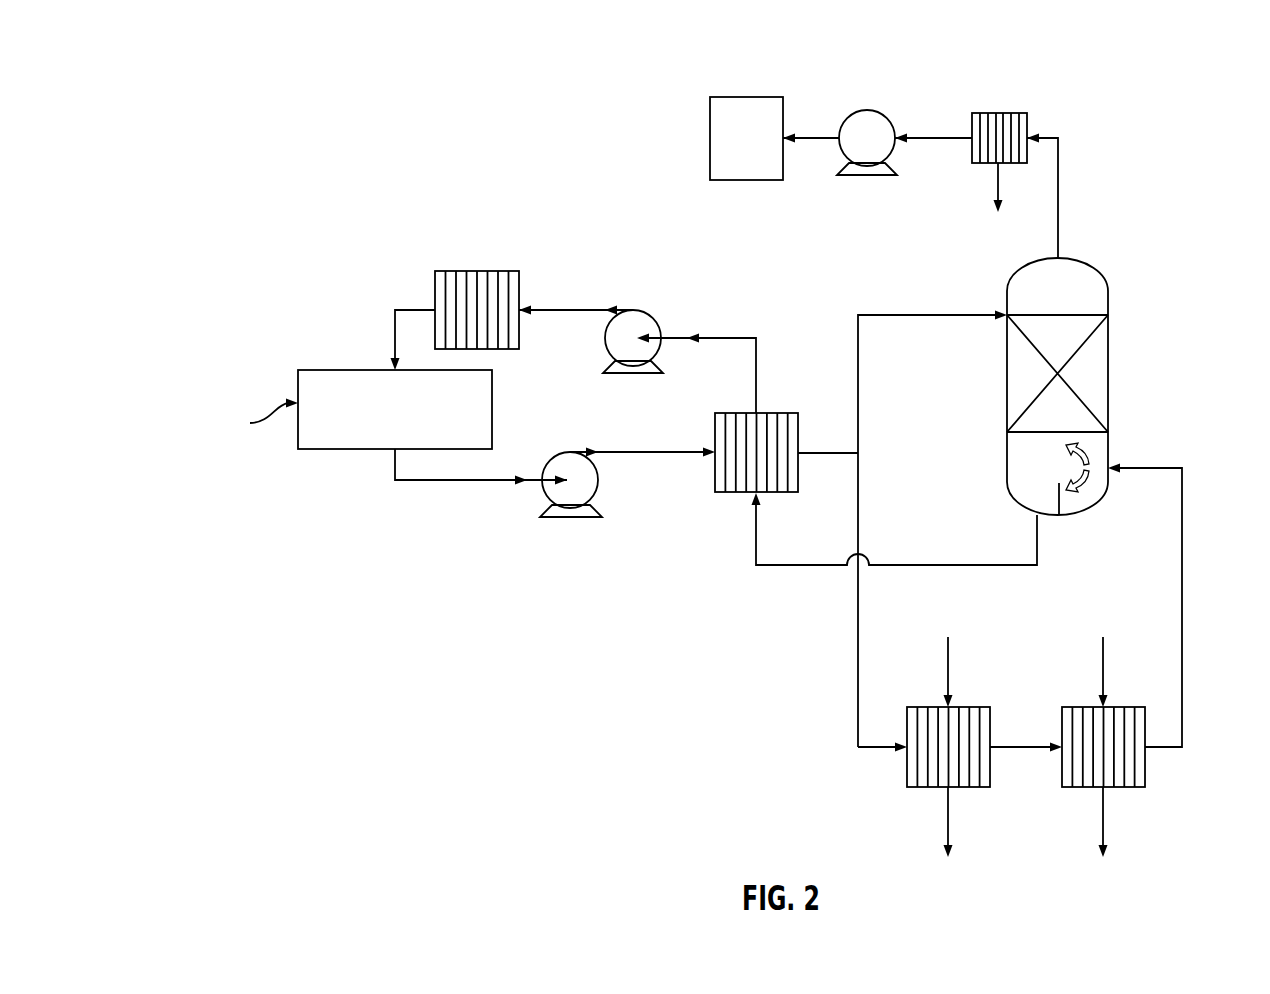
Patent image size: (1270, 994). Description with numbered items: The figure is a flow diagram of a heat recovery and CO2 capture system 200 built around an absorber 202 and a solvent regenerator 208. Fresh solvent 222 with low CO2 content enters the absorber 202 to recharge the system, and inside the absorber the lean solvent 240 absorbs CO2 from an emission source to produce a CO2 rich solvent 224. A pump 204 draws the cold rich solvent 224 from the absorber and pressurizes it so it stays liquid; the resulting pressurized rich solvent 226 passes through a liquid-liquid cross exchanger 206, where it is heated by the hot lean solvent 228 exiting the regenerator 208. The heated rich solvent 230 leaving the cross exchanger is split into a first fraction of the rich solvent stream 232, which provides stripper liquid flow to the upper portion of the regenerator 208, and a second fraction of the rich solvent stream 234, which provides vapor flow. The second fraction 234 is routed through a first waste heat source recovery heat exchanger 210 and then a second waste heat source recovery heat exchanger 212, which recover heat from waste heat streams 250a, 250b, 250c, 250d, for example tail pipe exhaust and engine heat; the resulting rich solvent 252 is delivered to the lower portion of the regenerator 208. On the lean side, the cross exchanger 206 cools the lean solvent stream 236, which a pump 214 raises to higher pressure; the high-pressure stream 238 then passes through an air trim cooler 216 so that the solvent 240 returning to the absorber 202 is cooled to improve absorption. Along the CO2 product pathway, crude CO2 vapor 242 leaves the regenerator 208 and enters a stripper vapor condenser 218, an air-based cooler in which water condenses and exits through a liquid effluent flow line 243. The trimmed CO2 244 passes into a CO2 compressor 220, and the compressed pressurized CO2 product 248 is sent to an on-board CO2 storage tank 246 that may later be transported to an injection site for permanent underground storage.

The heat recovery and CO2 capture system 200 is at (352, 66).
The absorber 202 is at (419, 425).
The pump 204 is at (570, 495).
The liquid-liquid cross exchanger 206 is at (768, 412).
The solvent regenerator 208 is at (1095, 307).
The first waste heat source recovery heat exchanger 210 is at (973, 777).
The second waste heat source recovery heat exchanger 212 is at (1130, 765).
The pump 214 is at (617, 347).
The air trim cooler 216 is at (473, 270).
The stripper vapor condenser 218 is at (998, 113).
The CO2 compressor 220 is at (867, 110).
The fresh solvent 222 is at (251, 421).
The CO2 rich solvent 224 is at (460, 483).
The pressurized rich solvent 226 is at (662, 455).
The hot lean solvent 228 is at (775, 567).
The heated rich solvent 230 is at (840, 455).
The first fraction of the rich solvent stream 232 is at (912, 315).
The second fraction of the rich solvent stream 234 is at (857, 703).
The lean solvent stream 236 is at (752, 335).
The high-pressure stream 238 is at (573, 308).
The lean solvent 240 is at (403, 308).
The crude CO2 vapor 242 is at (1058, 198).
The liquid effluent flow line 243 is at (997, 190).
The trimmed CO2 244 is at (933, 137).
The on-board CO2 storage tank 246 is at (755, 112).
The compressed pressurized CO2 product 248 is at (815, 137).
The waste heat stream 250a is at (950, 662).
The waste heat stream 250b is at (1130, 630).
The waste heat stream 250c is at (945, 807).
The waste heat stream 250d is at (1103, 822).
The rich solvent 252 is at (1182, 507).